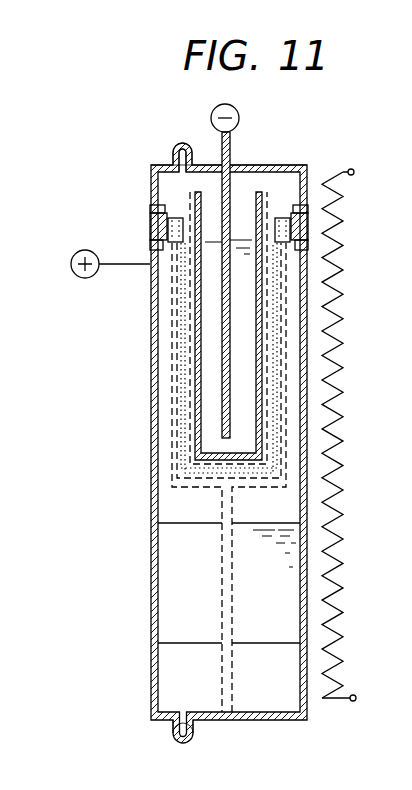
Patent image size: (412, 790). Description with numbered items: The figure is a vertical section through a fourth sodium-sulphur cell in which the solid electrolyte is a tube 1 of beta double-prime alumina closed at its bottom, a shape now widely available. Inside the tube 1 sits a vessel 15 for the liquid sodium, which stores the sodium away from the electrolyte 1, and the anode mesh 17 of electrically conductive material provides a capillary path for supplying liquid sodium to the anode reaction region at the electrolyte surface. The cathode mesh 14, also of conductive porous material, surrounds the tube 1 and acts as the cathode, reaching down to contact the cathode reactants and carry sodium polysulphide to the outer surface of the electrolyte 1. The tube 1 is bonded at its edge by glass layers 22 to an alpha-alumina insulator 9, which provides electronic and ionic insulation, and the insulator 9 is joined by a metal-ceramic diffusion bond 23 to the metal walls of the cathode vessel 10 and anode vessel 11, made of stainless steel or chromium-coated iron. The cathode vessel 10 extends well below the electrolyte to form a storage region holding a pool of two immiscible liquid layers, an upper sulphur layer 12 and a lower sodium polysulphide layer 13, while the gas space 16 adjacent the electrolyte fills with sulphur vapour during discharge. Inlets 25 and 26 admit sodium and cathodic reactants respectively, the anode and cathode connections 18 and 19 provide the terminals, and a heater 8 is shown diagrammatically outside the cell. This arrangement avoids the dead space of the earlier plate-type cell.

The solid electrolyte tube 1 is at (190, 340).
The heater 8 is at (335, 392).
The insulator 9 is at (150, 229).
The cathode vessel 10 is at (308, 453).
The anode vessel 11 is at (277, 164).
The sulphur layer 12 is at (285, 620).
The sodium polysulphide layer 13 is at (285, 690).
The cathode mesh 14 is at (287, 318).
The safety vessel 15 is at (260, 203).
The gas space 16 is at (292, 358).
The anode mesh 17 is at (182, 306).
The anode connection 18 is at (239, 118).
The cathode connection 19 is at (75, 278).
The glass layers 22 is at (283, 236).
The metal-ceramic diffusion bond 23 is at (150, 210).
The sodium inlet 25 is at (178, 152).
The cathodic reactant inlet 26 is at (174, 726).